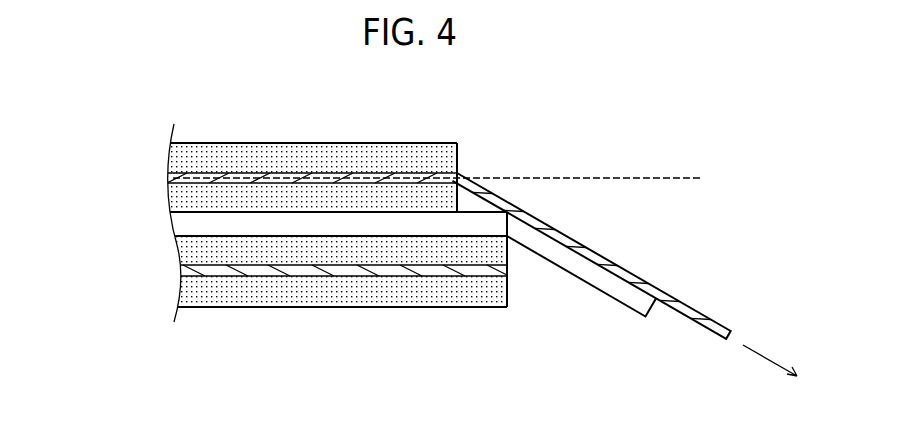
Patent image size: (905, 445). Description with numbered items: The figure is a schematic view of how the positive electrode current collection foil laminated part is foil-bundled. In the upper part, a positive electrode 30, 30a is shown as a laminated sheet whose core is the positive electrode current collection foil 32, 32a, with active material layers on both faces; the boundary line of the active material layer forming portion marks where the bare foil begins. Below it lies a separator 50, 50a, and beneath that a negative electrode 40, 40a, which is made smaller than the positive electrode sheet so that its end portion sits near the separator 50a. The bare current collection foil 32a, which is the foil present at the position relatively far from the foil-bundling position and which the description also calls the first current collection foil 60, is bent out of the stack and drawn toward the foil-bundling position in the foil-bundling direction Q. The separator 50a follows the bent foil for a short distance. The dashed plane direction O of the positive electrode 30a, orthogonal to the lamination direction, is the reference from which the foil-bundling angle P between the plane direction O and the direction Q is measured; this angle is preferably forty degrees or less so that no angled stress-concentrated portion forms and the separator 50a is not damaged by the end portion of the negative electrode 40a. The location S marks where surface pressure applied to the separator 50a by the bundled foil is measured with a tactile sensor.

The positive electrode 30 is at (275, 144).
The positive electrode 30a is at (275, 144).
The positive electrode current collection foil 32 is at (308, 130).
The positive electrode current collection foil 32a is at (333, 178).
The negative electrode 40 is at (275, 271).
The negative electrode 40a is at (147, 238).
The separator 50 is at (341, 261).
The separator 50a is at (188, 226).
The first current collection foil 60 is at (680, 300).
The plane direction O is at (450, 179).
The foil-bundling angle P is at (509, 212).
The surface pressure measurement position S is at (508, 217).
The foil-bundling direction Q is at (783, 371).